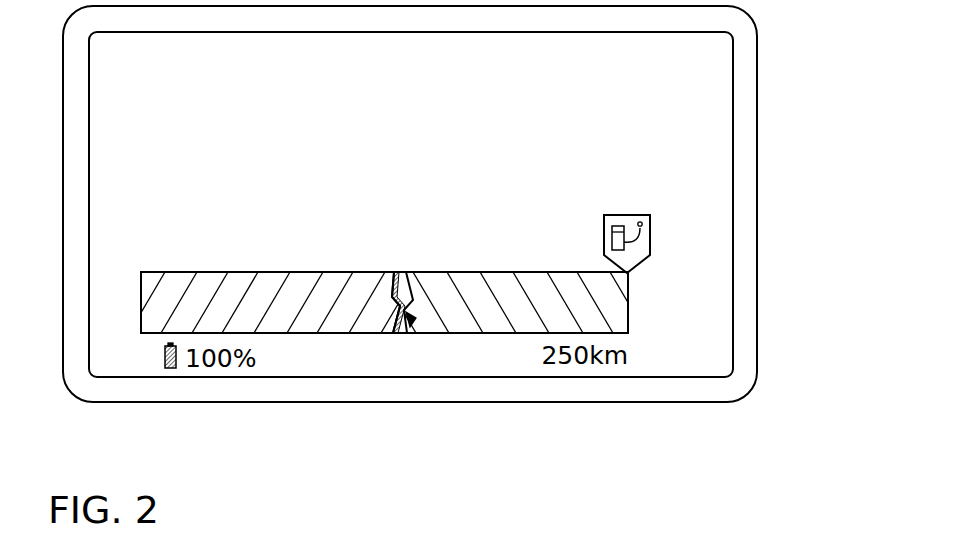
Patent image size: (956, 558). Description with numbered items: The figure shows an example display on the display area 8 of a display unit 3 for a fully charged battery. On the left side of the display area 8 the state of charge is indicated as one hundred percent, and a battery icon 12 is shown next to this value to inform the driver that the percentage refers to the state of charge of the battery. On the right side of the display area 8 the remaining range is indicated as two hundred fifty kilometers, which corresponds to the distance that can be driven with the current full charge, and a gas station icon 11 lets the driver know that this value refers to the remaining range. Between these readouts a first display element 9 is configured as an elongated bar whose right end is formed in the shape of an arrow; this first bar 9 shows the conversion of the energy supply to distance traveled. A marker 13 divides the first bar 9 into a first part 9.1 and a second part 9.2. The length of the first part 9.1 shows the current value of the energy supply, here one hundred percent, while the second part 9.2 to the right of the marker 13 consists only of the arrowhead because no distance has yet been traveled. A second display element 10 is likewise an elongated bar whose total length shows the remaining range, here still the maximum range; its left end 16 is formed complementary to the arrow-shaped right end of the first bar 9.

The display unit 3 is at (757, 190).
The display area 8 is at (709, 96).
The first display element 9 is at (238, 252).
The first part 9.1 is at (313, 293).
The second part 9.2 is at (402, 298).
The second display element 10 is at (507, 252).
The gas station icon 11 is at (633, 215).
The battery icon 12 is at (170, 372).
The marker 13 is at (392, 333).
The left end 16 is at (413, 322).